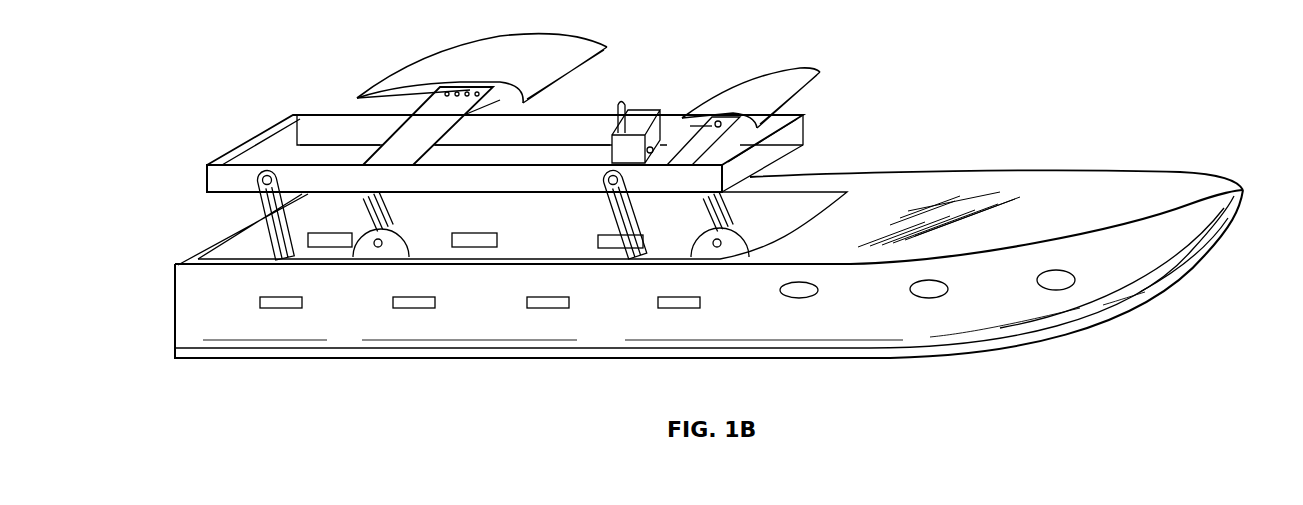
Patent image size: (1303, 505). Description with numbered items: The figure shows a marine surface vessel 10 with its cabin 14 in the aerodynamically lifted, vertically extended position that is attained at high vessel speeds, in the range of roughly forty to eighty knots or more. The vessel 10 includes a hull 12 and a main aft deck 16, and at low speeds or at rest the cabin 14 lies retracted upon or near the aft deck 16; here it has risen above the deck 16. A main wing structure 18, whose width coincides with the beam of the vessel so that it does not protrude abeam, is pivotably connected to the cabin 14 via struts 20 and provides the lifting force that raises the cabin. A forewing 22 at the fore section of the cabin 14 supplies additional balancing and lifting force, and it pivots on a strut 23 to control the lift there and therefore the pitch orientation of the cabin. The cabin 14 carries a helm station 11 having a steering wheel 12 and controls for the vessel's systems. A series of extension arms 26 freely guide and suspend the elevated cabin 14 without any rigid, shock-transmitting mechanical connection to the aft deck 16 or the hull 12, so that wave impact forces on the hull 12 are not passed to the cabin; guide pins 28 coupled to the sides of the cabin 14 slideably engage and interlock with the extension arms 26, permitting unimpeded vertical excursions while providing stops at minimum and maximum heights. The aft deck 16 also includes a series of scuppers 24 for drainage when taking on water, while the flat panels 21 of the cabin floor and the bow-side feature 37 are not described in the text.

The marine surface vessel 10 is at (1052, 145).
The helm station 11 is at (647, 110).
The hull 12 is at (827, 358).
The cabin 14 is at (263, 132).
The main aft deck 16 is at (533, 258).
The main wing structure 18 is at (520, 43).
The struts 20 is at (437, 165).
The panel 21 is at (332, 157).
The forewing 22 is at (766, 78).
The strut 23 is at (707, 133).
The scuppers 24 is at (272, 295).
The extension arms 26 is at (270, 248).
The guide pins 28 is at (272, 166).
The bow rail 37 is at (1184, 270).